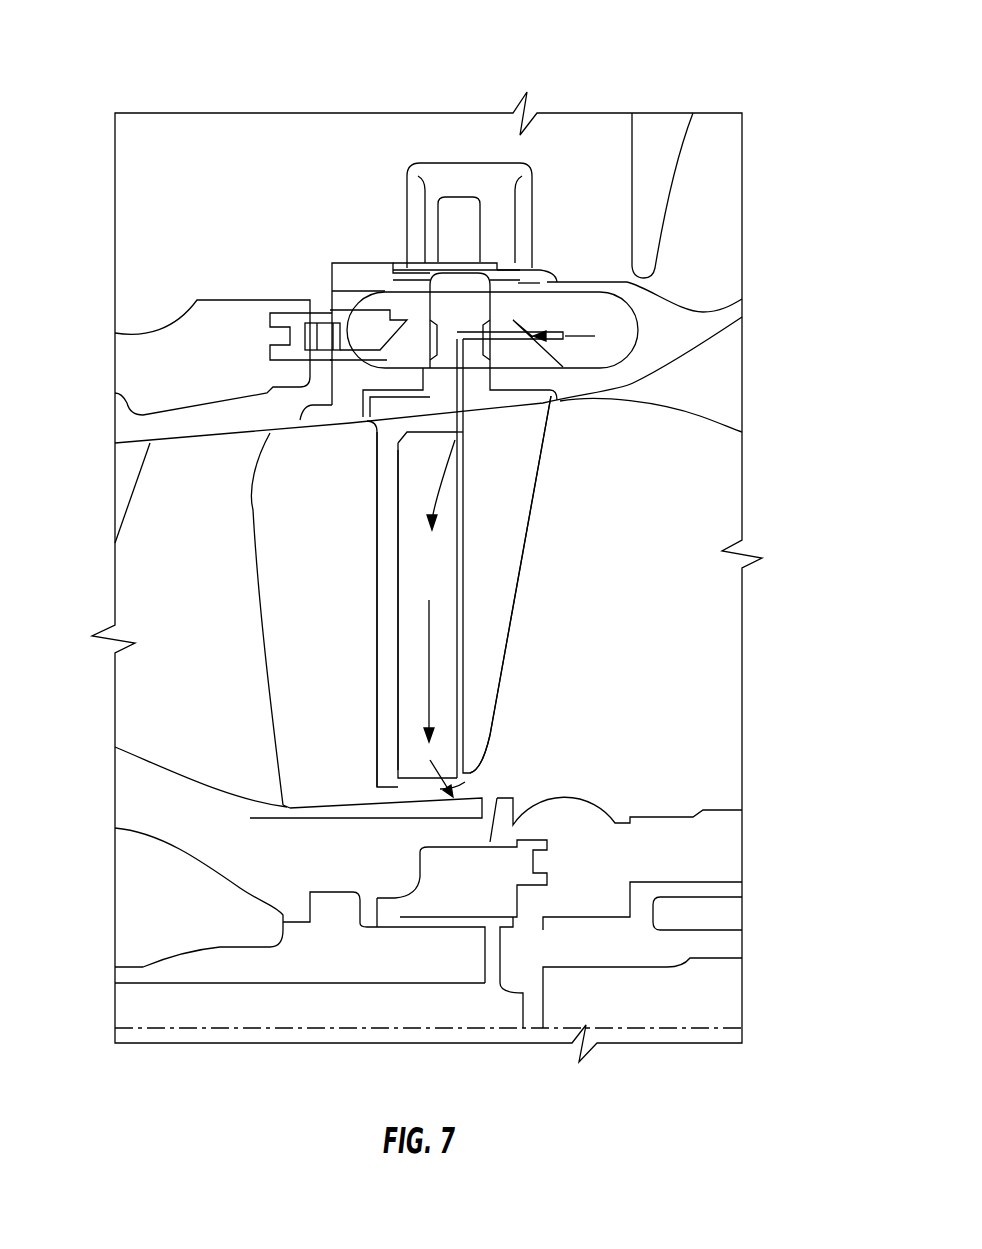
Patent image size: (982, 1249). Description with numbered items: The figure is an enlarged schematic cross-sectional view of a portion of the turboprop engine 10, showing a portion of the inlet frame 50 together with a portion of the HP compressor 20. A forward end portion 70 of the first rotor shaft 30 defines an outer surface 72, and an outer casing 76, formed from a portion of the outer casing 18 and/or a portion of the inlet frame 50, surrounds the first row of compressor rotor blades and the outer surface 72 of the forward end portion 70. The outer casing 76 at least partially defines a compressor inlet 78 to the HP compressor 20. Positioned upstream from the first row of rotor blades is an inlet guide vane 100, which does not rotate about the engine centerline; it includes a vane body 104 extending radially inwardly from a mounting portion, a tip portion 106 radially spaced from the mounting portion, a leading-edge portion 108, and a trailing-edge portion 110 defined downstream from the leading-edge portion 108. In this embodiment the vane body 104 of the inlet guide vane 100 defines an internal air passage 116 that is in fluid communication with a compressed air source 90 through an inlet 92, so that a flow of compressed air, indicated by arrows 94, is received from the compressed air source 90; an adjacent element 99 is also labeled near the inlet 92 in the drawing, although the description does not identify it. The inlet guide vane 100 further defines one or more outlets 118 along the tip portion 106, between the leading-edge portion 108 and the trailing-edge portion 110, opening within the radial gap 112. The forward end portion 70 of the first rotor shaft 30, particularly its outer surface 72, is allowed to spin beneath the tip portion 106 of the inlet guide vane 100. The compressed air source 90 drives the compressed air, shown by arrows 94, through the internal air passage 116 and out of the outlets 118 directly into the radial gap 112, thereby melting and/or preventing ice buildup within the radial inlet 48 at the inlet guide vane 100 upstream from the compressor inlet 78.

The turboprop engine 10 is at (233, 58).
The outer casing 18 is at (127, 358).
The HP compressor 20 is at (108, 731).
The first rotor shaft 30 is at (197, 828).
The radial inlet 48 is at (669, 562).
The inlet frame 50 is at (710, 295).
The forward end portion 70 is at (437, 816).
The outer surface 72 is at (470, 790).
The outer casing 76 is at (338, 245).
The compressor inlet 78 is at (334, 577).
The compressed air source 90 is at (602, 323).
The inlet 92 is at (502, 337).
The arrows 94 is at (435, 500).
The seal land 99 is at (568, 337).
The inlet guide vane 100 is at (512, 503).
The vane body 104 is at (518, 433).
The tip portion 106 is at (390, 785).
The leading-edge portion 108 is at (505, 628).
The trailing-edge portion 110 is at (377, 610).
The radial gap 112 is at (387, 797).
The internal air passage 116 is at (449, 580).
The outlets 118 is at (481, 760).